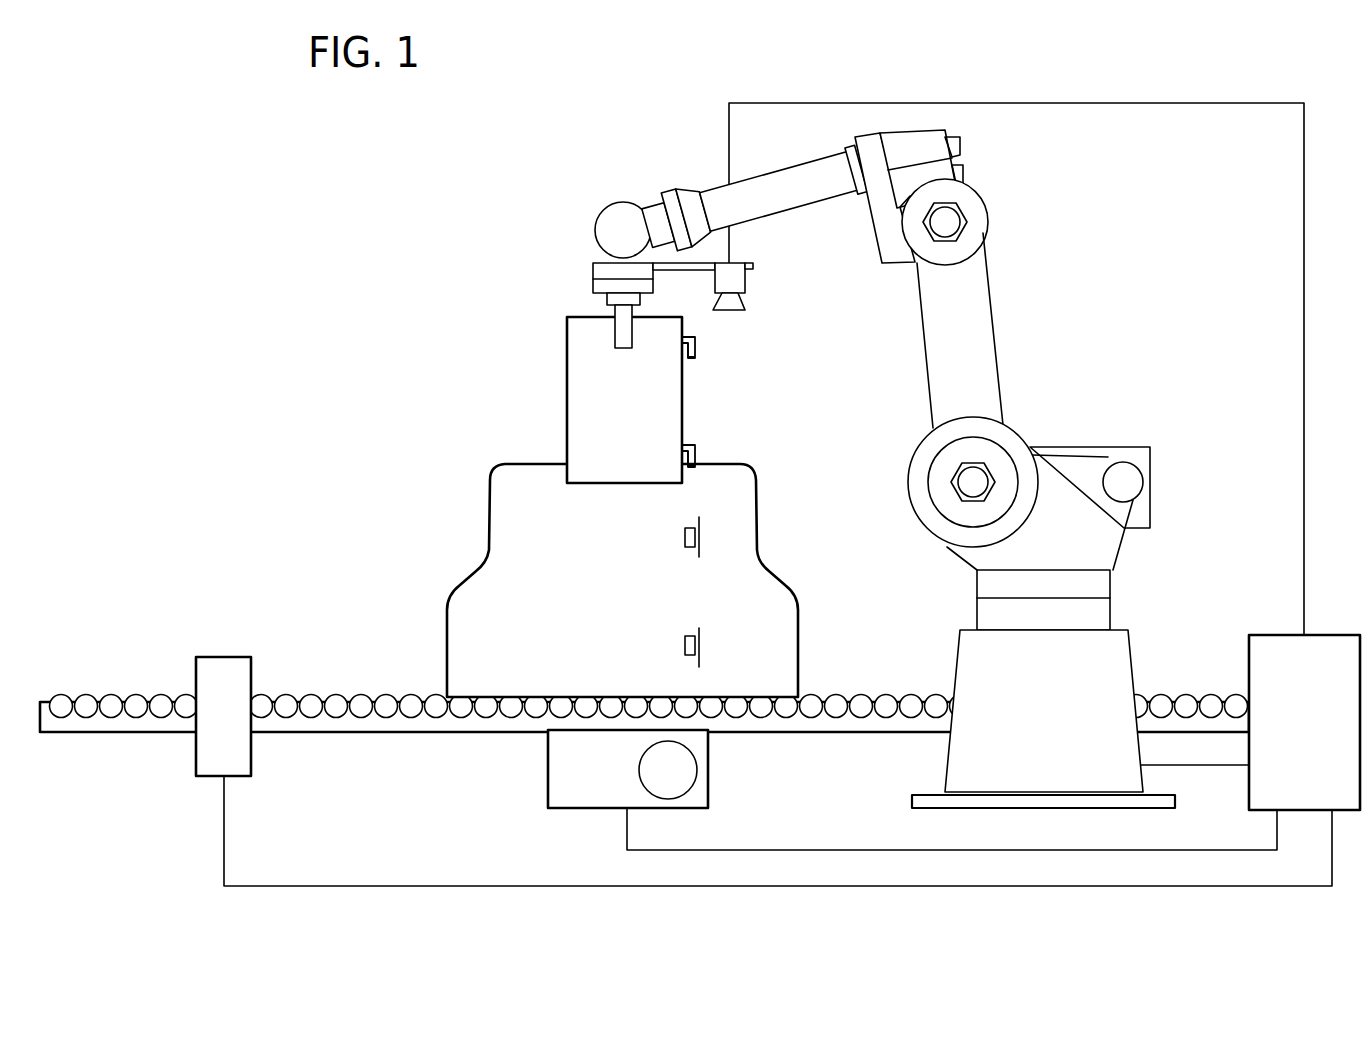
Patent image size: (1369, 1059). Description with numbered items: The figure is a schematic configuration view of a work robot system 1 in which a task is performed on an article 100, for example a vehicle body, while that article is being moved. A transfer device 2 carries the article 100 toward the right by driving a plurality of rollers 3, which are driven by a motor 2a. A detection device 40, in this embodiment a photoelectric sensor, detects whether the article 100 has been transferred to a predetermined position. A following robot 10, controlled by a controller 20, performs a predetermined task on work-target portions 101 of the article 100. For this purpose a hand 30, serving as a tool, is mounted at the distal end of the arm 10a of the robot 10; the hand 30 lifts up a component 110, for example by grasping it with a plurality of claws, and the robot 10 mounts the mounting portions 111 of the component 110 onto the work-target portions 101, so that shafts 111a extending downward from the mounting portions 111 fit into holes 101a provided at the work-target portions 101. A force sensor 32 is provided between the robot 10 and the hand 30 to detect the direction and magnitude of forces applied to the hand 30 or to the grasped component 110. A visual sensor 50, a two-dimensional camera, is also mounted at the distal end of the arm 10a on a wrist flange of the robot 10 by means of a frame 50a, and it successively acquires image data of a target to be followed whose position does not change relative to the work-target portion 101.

The work robot system 1 is at (524, 223).
The transfer device 2 is at (78, 733).
The motor 2a is at (547, 770).
The rollers 3 is at (60, 694).
The robot 10 is at (885, 469).
The arm 10a is at (1003, 320).
The controller 20 is at (1248, 657).
The hand 30 is at (602, 305).
The force sensor 32 is at (592, 279).
The detection device 40 is at (224, 656).
The visual sensor 50 is at (784, 271).
The frame 50a is at (753, 266).
The article 100 is at (476, 577).
The work-target portion 101 is at (717, 592).
The hole 101a is at (684, 537).
The component 110 is at (566, 392).
The mounting portion 111 is at (752, 395).
The shaft 111a is at (696, 352).